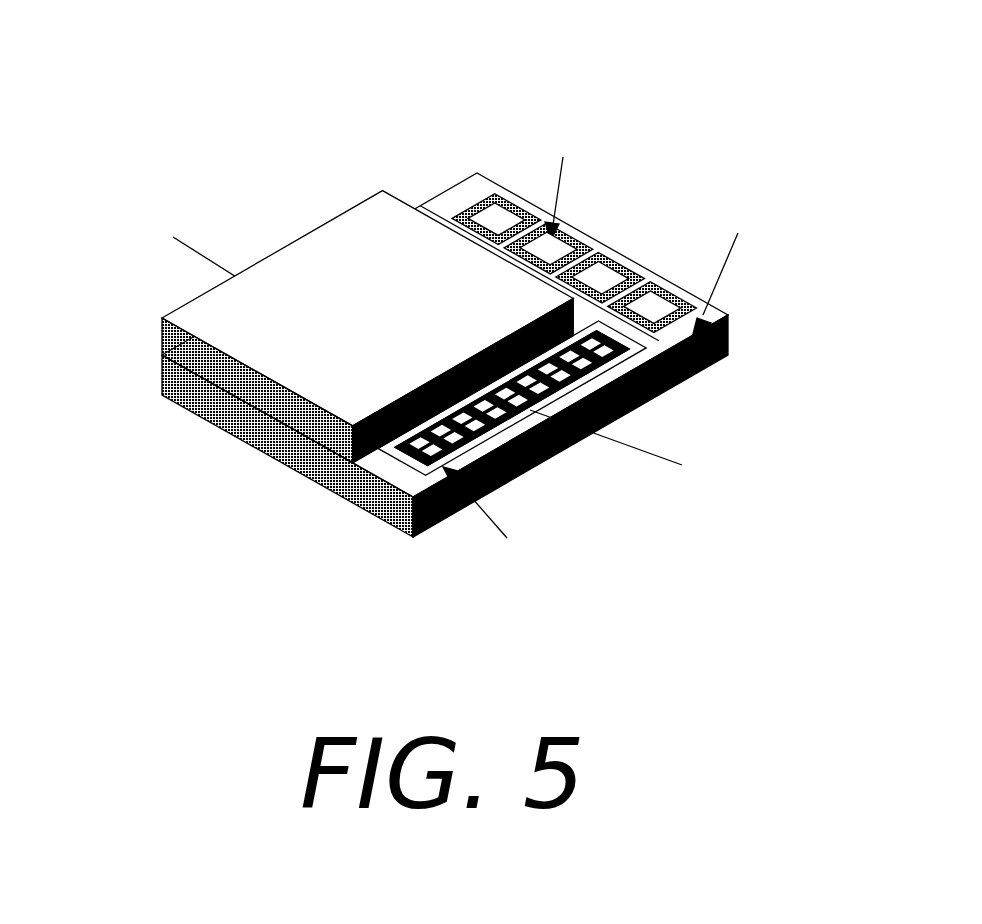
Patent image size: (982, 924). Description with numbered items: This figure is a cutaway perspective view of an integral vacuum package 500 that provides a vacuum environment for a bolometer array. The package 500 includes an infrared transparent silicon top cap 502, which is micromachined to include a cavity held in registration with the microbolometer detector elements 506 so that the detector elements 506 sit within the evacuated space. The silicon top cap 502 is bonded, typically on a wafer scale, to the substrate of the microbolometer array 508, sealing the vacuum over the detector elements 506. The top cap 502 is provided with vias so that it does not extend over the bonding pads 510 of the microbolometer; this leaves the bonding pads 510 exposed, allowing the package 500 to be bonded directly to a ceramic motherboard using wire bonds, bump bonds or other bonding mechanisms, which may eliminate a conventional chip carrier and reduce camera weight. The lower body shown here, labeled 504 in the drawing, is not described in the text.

The integral vacuum package 500 is at (414, 66).
The infrared transparent silicon top cap 502 is at (207, 298).
The base wafer 504 is at (650, 405).
The microbolometer detector elements 506 is at (385, 445).
The microbolometer array 508 is at (737, 337).
The bonding pads 510 is at (655, 302).